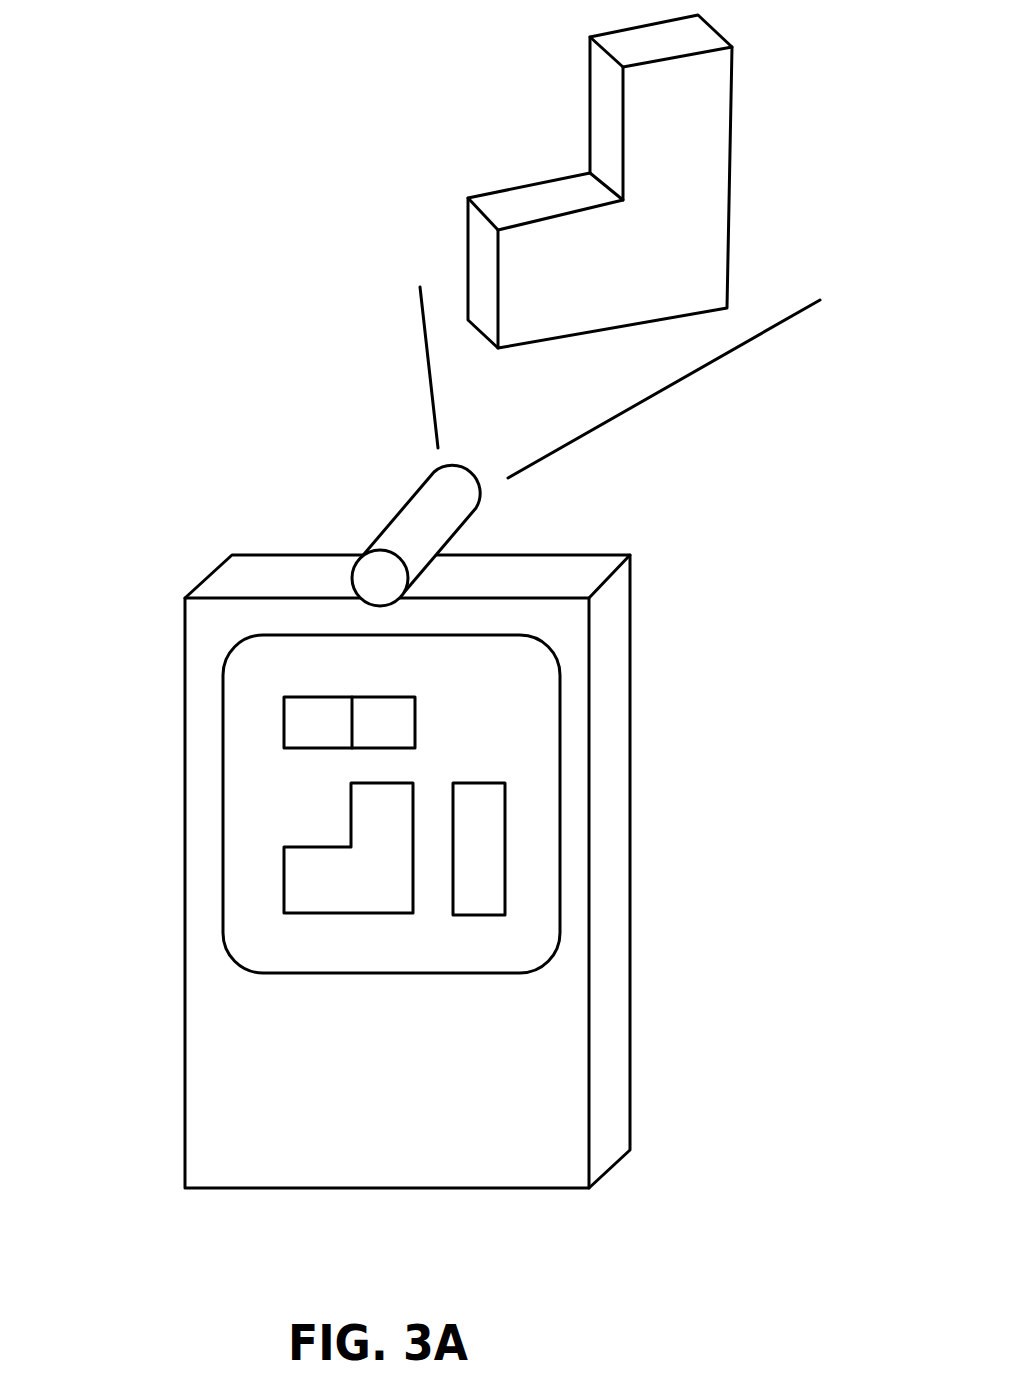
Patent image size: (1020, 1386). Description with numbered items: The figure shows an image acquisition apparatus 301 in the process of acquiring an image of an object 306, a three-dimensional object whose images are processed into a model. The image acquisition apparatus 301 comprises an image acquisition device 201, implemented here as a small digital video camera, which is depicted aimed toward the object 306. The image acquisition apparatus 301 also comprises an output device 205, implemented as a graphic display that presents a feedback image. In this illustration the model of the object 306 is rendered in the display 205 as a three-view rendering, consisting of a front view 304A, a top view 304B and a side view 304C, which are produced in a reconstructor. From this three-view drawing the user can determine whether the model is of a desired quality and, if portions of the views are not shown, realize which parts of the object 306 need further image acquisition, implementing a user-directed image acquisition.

The image acquisition device 201 is at (383, 508).
The output device 205 is at (317, 684).
The image acquisition apparatus 301 is at (254, 1154).
The front view 304A is at (305, 885).
The top view 304B is at (305, 718).
The side view 304C is at (485, 800).
The object 306 is at (603, 110).